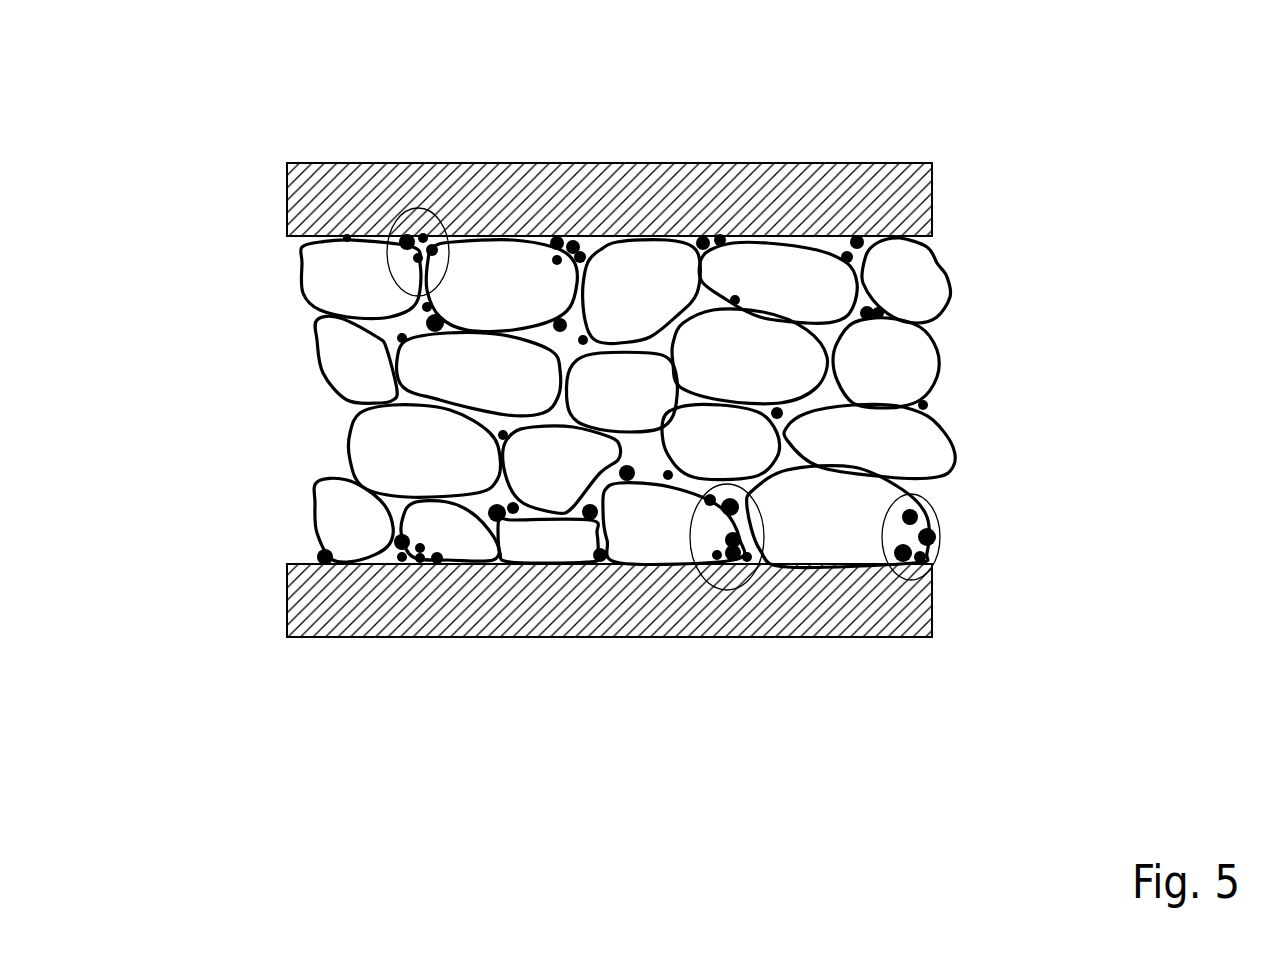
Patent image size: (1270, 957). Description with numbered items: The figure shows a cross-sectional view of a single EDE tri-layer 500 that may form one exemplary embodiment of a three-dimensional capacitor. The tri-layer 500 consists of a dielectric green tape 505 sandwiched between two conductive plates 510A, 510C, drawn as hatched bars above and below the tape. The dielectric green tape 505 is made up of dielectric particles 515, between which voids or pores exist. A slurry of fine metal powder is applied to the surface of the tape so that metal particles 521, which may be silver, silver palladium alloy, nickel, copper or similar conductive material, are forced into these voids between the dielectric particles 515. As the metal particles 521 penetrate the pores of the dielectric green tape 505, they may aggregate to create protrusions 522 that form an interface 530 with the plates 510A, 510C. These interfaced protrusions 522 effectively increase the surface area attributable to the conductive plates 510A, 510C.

The EDE tri-layer 500 is at (1152, 25).
The dielectric green tape 505 is at (265, 233).
The plate 510A is at (913, 193).
The plate 510C is at (935, 607).
The dielectric particles 515 is at (917, 450).
The metal particles 521 is at (557, 240).
The protrusions 522 is at (437, 238).
The interface 530 is at (400, 563).